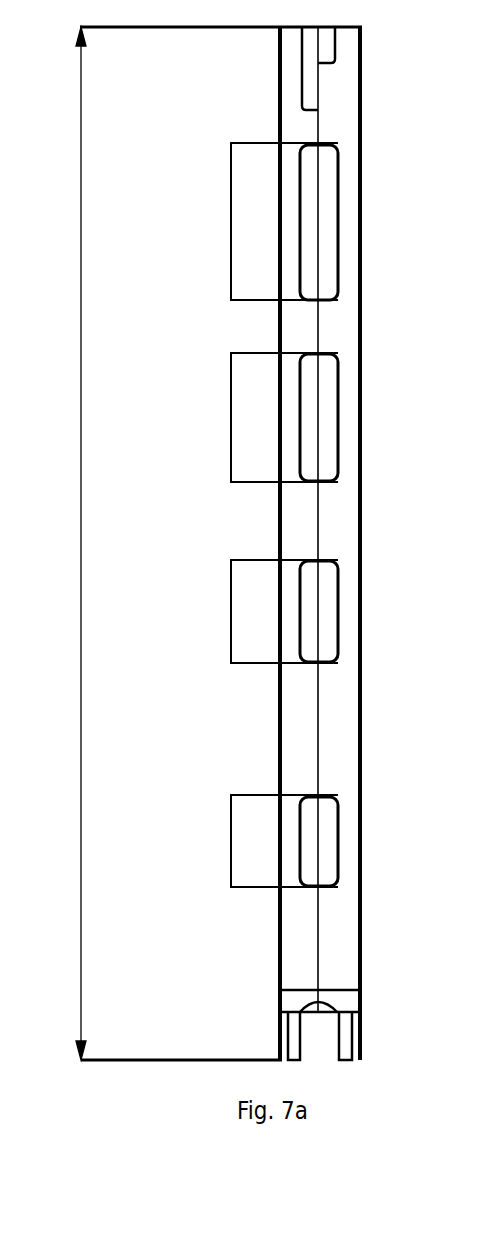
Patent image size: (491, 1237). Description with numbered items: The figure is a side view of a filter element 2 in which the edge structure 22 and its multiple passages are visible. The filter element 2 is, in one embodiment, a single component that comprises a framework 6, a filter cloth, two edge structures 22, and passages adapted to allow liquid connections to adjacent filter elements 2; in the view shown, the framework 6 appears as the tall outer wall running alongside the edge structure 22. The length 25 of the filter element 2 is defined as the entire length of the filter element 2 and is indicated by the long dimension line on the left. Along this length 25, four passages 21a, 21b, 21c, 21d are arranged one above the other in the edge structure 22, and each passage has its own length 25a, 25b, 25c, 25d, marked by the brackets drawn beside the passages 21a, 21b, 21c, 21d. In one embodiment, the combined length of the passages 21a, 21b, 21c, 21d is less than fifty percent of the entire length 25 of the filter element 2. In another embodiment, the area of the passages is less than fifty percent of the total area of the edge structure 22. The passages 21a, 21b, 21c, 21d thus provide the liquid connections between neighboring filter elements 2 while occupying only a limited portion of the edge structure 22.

The filter element 2 is at (390, 147).
The framework 6 is at (365, 305).
The edge structure 22 is at (330, 725).
The passage 21a is at (312, 245).
The passage 21b is at (315, 430).
The passage 21c is at (310, 620).
The passage 21d is at (310, 855).
The length of passage 25a is at (238, 221).
The length of passage 25b is at (238, 417).
The length of passage 25c is at (238, 611).
The length of passage 25d is at (238, 841).
The length of the filter element 25 is at (56, 543).